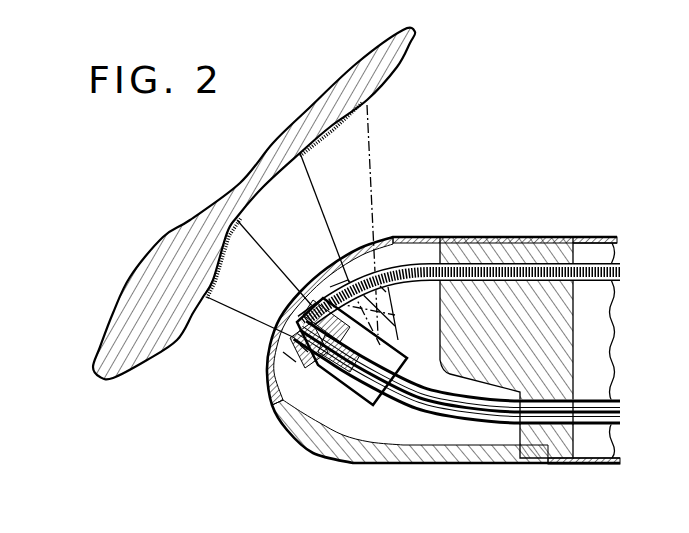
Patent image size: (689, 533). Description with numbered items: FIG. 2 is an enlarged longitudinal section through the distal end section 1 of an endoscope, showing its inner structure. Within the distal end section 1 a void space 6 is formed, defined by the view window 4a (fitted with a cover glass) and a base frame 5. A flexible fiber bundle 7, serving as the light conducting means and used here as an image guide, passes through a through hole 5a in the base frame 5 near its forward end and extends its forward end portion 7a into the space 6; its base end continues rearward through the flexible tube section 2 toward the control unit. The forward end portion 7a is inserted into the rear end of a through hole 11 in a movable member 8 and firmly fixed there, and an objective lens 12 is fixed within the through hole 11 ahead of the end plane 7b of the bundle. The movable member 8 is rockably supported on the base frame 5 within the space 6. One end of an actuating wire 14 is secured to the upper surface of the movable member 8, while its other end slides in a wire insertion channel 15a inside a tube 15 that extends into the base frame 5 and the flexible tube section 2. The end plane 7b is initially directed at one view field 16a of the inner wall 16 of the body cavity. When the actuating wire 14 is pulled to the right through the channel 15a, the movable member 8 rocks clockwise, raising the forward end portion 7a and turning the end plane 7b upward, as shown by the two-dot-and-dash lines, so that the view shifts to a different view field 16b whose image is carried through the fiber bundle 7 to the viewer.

The distal end section 1 is at (469, 236).
The flexible tube section 2 is at (585, 236).
The view window 4a is at (410, 238).
The base frame 5 is at (500, 248).
The through hole 5a is at (548, 422).
The void space 6 is at (400, 432).
The fiber bundle 7 is at (497, 426).
The forward end portion 7a is at (338, 383).
The end plane 7b is at (312, 366).
The movable member 8 is at (384, 287).
The through hole 11 is at (294, 360).
The objective lens 12 is at (313, 325).
The actuating wire 14 is at (621, 272).
The tube 15 is at (612, 262).
The wire insertion channel 15a is at (613, 288).
The inner wall 16 is at (163, 343).
The view field 16a is at (222, 248).
The view field 16b is at (330, 134).